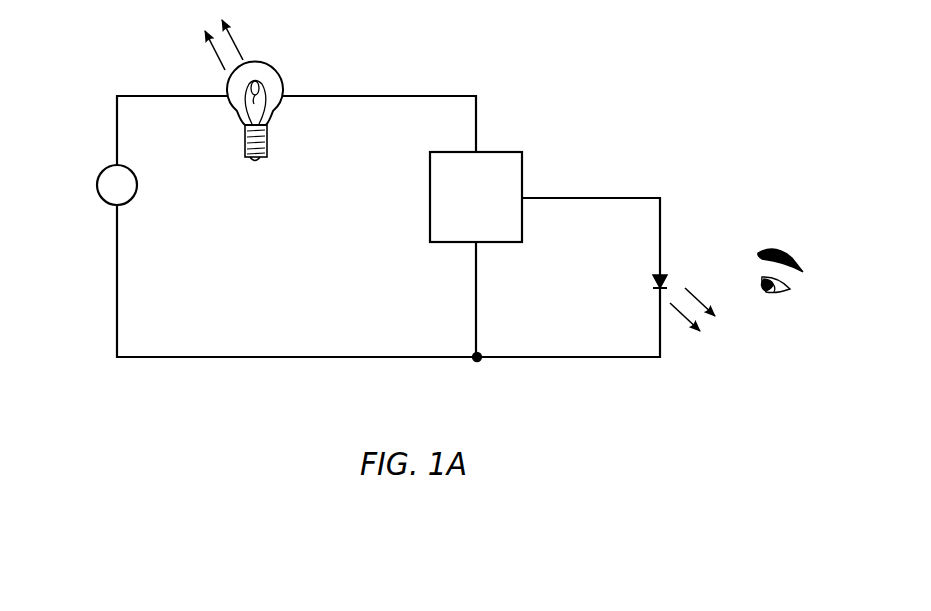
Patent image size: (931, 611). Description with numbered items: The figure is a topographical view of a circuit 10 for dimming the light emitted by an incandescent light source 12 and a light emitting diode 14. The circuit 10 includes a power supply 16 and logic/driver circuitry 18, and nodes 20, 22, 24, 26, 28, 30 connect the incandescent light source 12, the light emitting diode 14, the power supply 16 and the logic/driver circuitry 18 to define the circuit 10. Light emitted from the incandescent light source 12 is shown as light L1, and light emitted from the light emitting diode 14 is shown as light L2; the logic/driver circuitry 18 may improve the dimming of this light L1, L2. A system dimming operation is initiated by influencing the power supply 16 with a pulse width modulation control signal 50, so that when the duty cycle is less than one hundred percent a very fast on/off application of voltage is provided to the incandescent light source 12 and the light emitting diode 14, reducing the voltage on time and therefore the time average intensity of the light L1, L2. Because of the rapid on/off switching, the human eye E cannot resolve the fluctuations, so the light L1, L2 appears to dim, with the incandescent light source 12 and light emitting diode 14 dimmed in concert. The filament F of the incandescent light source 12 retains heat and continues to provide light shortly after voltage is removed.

The circuit 10 is at (624, 66).
The incandescent light source 12 is at (279, 95).
The light emitting diode 14 is at (674, 262).
The power supply 16 is at (137, 176).
The logic/driver circuitry 18 is at (506, 151).
The node 20 is at (130, 95).
The node 22 is at (442, 95).
The node 24 is at (627, 197).
The node 26 is at (567, 356).
The node 28 is at (475, 302).
The node 30 is at (207, 356).
The pulse width modulation control signal 50 is at (87, 185).
The filament F is at (264, 90).
The light emitted from the incandescent light source L1 is at (218, 35).
The light emitted from the LED L2 is at (696, 321).
The human eye E is at (787, 230).